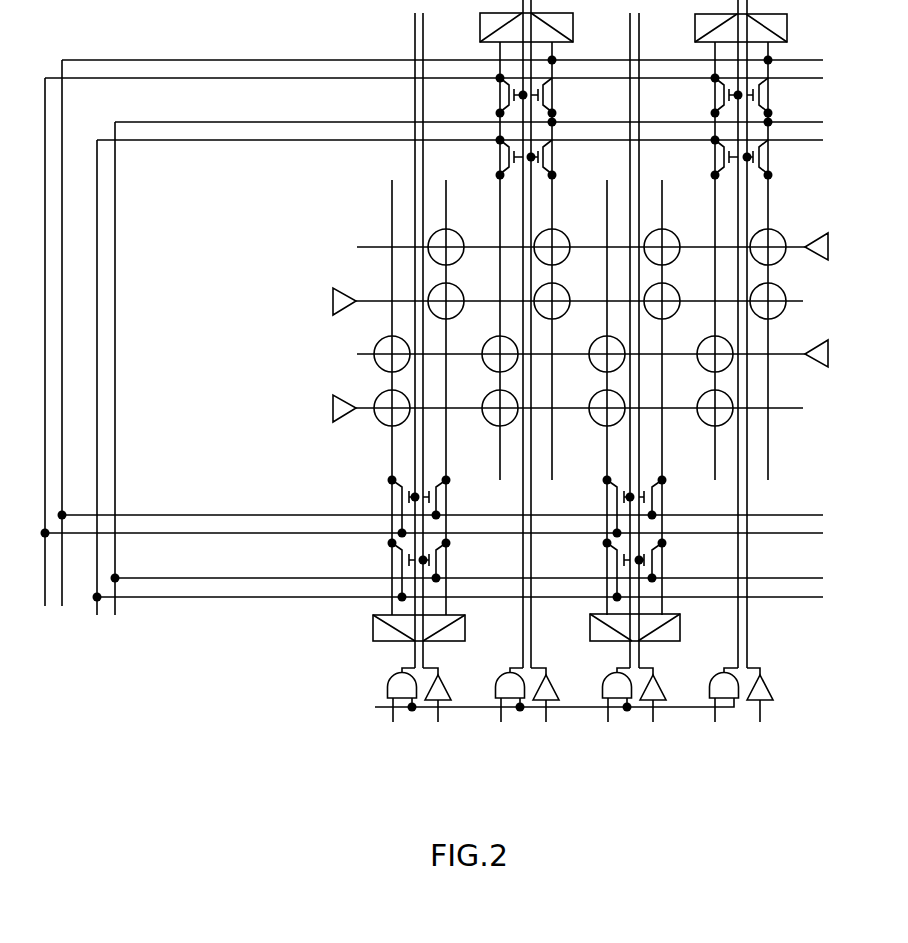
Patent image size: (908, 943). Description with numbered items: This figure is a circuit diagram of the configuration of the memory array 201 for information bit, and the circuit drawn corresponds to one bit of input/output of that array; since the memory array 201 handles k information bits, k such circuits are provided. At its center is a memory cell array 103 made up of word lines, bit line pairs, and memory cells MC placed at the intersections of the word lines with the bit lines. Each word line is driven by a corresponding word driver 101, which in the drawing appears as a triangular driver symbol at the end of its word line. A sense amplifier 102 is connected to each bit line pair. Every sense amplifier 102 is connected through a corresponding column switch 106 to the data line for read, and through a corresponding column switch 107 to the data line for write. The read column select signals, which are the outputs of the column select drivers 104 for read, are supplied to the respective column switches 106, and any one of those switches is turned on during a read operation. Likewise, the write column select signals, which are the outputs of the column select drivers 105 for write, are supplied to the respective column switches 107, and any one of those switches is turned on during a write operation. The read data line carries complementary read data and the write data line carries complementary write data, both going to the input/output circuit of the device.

The memory array for information bit 201 is at (880, 58).
The word driver 101 is at (330, 406).
The sense amplifier 102 is at (372, 622).
The memory cell array 103 is at (278, 285).
The column select driver for read 104 is at (405, 692).
The column select driver for write 105 is at (441, 702).
The column switch 106 is at (390, 497).
The column switch 107 is at (390, 565).
The memory cell MC is at (378, 419).